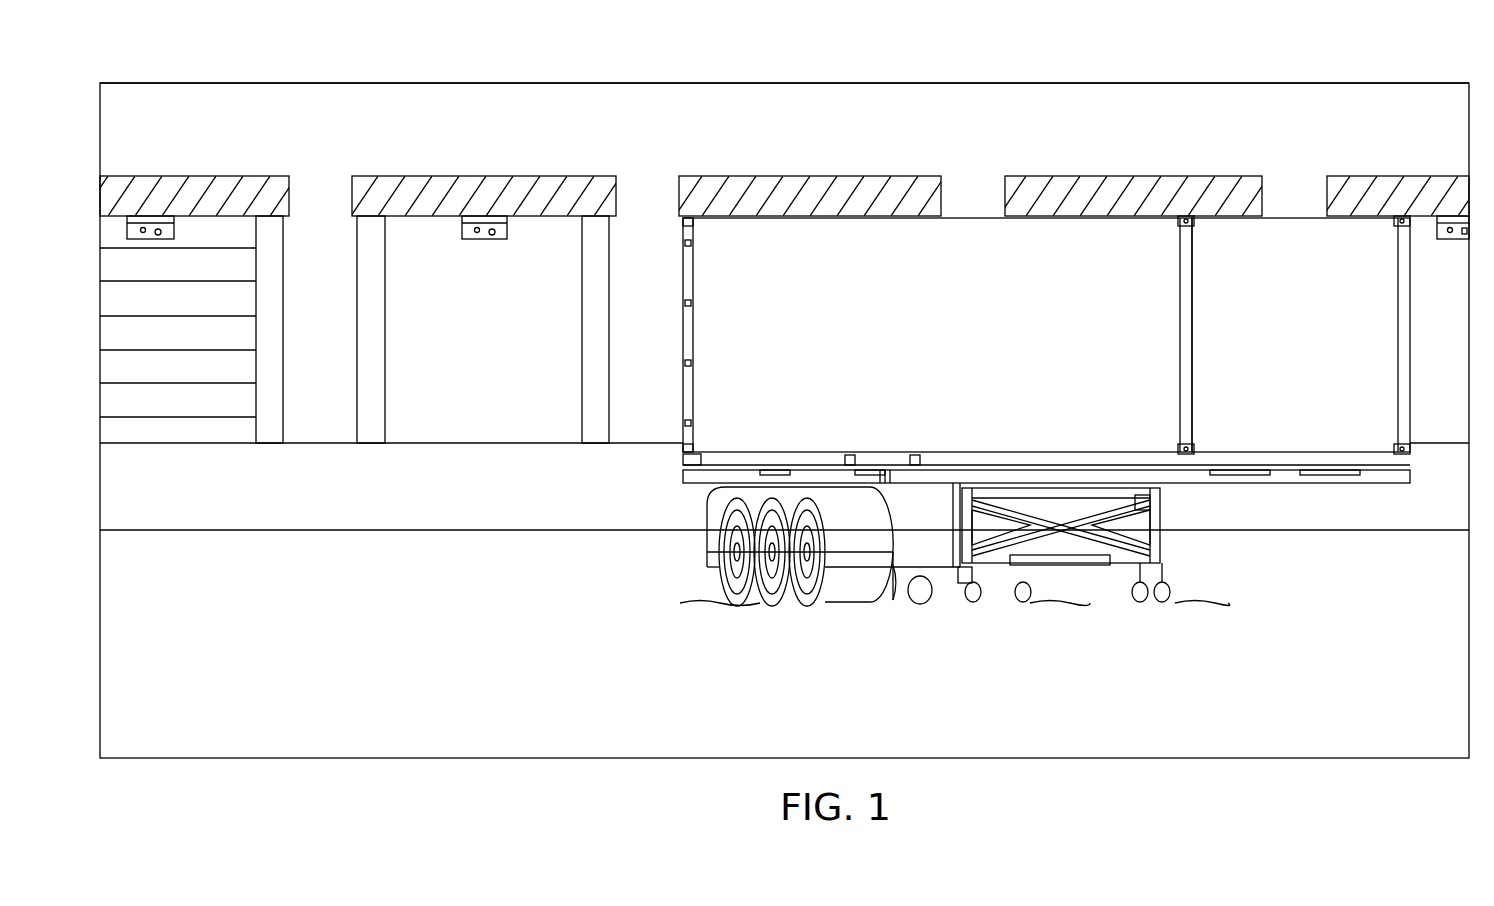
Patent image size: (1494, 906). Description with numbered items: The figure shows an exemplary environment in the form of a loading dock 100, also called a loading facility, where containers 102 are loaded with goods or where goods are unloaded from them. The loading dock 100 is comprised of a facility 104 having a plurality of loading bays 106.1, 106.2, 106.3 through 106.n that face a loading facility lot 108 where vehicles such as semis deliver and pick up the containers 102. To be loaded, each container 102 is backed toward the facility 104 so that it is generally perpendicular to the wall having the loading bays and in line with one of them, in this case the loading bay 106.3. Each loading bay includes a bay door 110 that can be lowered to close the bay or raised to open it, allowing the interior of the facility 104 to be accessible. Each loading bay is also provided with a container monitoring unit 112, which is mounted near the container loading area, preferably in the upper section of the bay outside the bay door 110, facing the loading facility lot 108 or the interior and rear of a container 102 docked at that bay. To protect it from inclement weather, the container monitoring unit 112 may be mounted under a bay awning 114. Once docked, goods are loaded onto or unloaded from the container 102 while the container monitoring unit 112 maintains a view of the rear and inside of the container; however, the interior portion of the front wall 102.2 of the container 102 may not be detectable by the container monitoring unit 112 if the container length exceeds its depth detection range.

The loading dock 100 is at (172, 42).
The container 102 is at (1073, 418).
The front wall 102.2 is at (1307, 430).
The facility 104 is at (1047, 97).
The loading bay 106.1 is at (276, 168).
The loading bay 106.2 is at (602, 168).
The loading bay 106.3 is at (918, 168).
The loading bay 106.n is at (1335, 158).
The loading facility lot 108 is at (510, 647).
The bay door 110 is at (190, 420).
The container monitoring unit 112 is at (152, 228).
The bay awning 114 is at (140, 192).